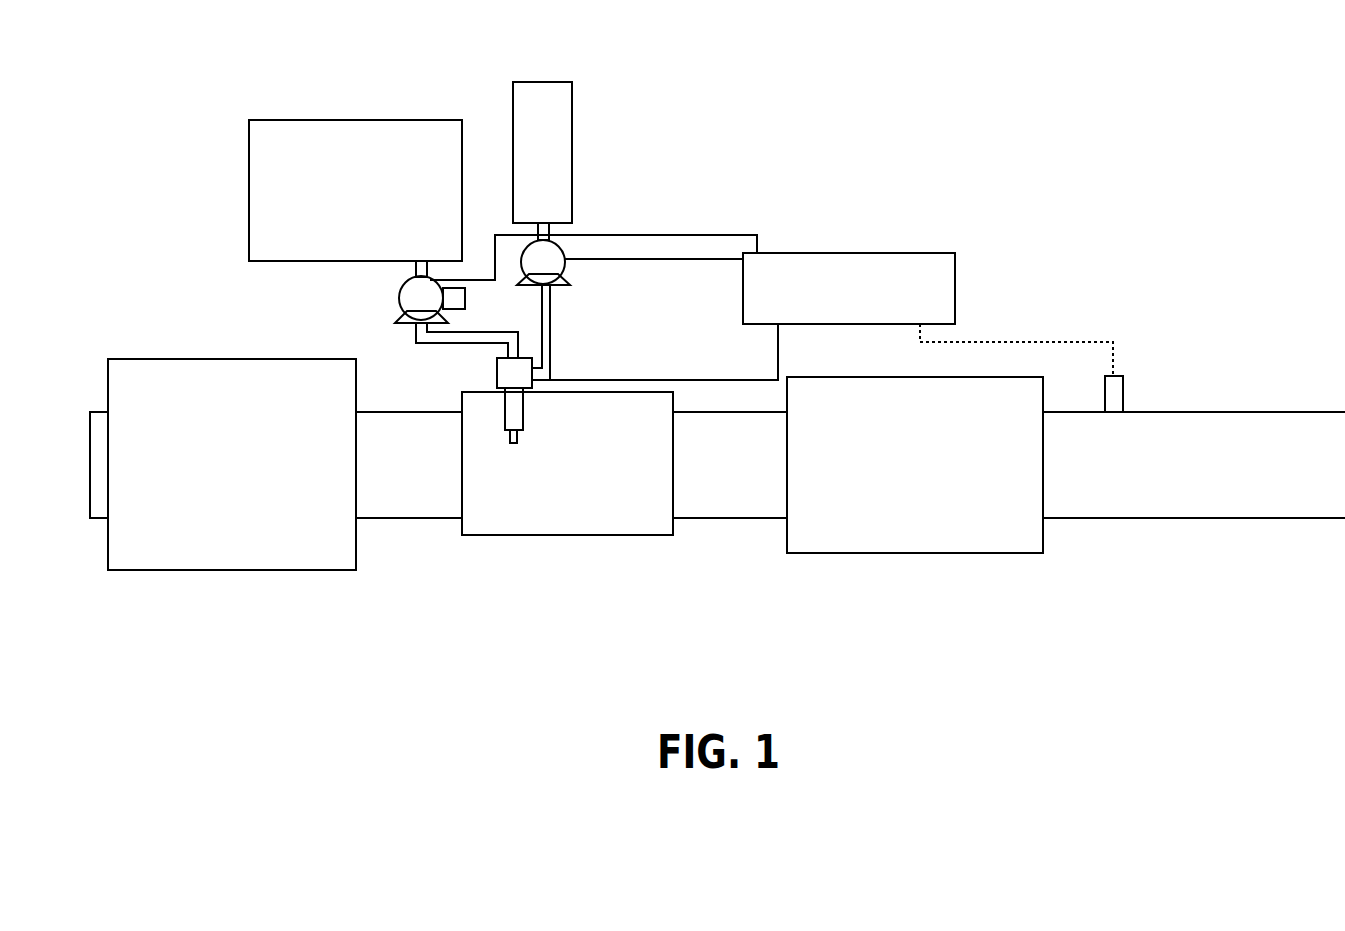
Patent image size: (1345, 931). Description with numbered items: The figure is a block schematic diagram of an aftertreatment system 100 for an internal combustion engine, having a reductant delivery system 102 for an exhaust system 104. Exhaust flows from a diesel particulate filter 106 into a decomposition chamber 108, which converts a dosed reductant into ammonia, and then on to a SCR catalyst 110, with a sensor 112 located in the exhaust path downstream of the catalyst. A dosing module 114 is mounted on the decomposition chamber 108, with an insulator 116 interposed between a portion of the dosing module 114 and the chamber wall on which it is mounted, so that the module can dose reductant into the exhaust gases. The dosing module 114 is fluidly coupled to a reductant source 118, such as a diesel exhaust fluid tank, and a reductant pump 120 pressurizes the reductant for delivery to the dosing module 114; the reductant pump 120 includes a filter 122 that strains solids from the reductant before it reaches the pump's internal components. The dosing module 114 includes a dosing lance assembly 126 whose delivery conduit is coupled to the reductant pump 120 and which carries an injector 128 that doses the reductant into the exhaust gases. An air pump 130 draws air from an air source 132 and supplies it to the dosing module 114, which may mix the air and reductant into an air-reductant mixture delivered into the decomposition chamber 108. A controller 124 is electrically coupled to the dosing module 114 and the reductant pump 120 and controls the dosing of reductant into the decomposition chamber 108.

The aftertreatment system 100 is at (993, 325).
The reductant delivery system 102 is at (616, 337).
The exhaust system 104 is at (462, 598).
The diesel particulate filter 106 is at (190, 570).
The decomposition chamber 108 is at (648, 537).
The SCR catalyst 110 is at (865, 553).
The sensor 112 is at (1140, 393).
The dosing module 114 is at (545, 377).
The insulator 116 is at (496, 384).
The reductant source 118 is at (308, 118).
The reductant pump 120 is at (399, 296).
The filter 122 is at (465, 298).
The controller 124 is at (806, 252).
The dosing lance assembly 126 is at (504, 418).
The injector 128 is at (522, 438).
The air pump 130 is at (560, 283).
The air source 132 is at (572, 115).